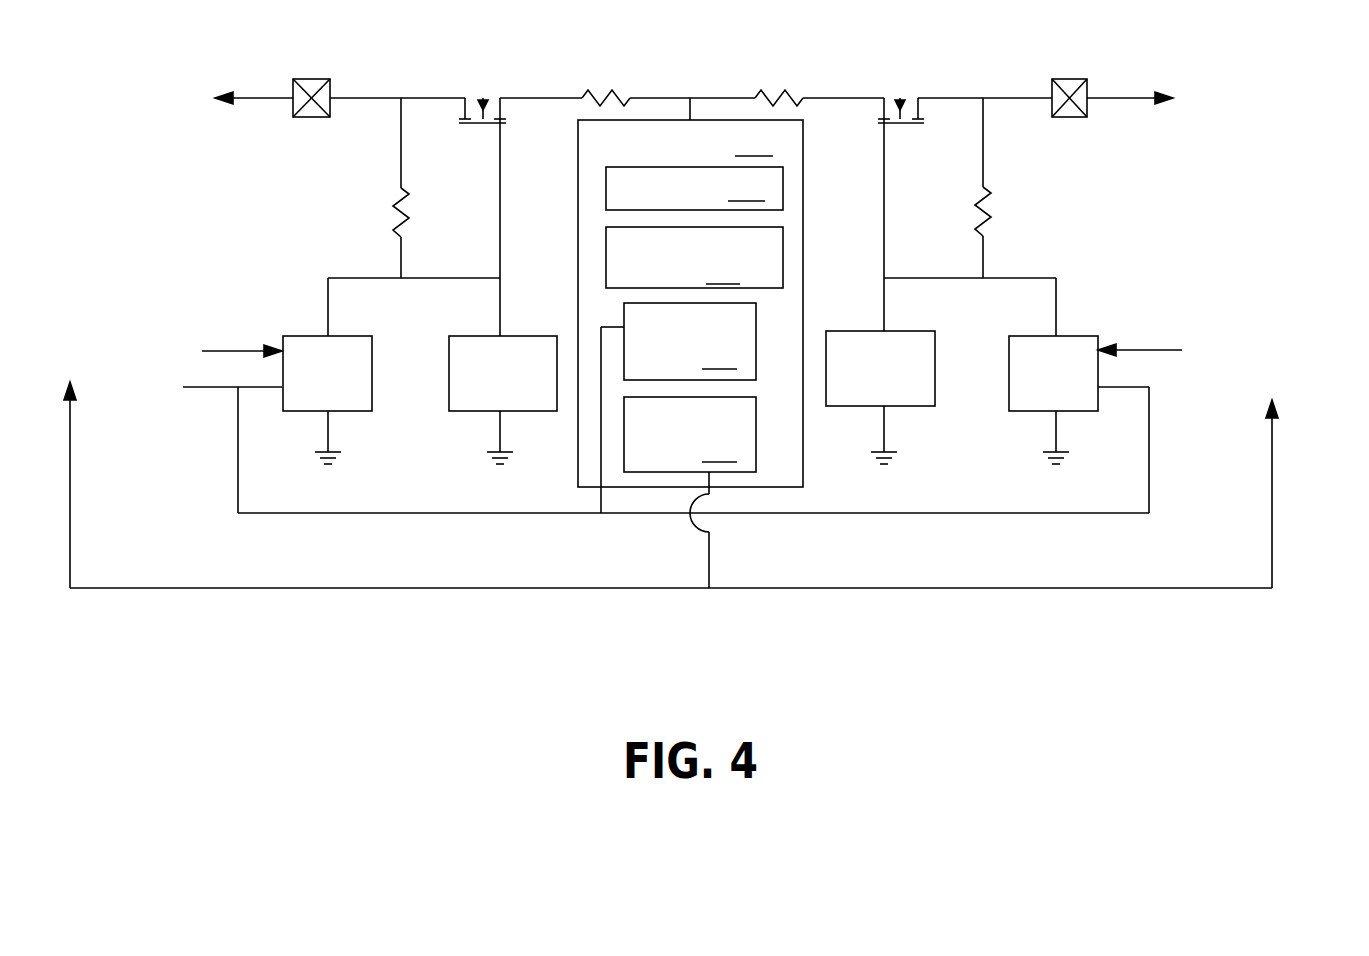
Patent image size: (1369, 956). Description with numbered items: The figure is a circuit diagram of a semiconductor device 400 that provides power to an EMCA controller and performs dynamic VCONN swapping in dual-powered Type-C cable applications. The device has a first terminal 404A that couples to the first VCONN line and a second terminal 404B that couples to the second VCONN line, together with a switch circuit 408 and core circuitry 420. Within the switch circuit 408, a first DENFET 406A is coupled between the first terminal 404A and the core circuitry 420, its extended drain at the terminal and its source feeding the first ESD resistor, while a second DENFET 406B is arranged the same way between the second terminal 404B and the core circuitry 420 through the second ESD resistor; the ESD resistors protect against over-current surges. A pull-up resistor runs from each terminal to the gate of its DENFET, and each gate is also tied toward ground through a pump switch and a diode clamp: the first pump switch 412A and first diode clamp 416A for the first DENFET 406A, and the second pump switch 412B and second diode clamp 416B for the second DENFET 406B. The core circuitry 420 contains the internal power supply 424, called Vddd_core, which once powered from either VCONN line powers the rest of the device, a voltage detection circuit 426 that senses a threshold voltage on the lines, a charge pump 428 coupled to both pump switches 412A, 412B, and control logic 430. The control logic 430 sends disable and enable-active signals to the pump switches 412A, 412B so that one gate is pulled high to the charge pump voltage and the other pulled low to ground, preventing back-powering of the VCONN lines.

The semiconductor device 400 is at (115, 37).
The first terminal 404A is at (311, 118).
The second terminal 404B is at (1069, 118).
The first drain-extended n-type field effect transistor (DENFET) 406A is at (483, 92).
The second drain-extended n-type field effect transistor (DENFET) 406B is at (900, 92).
The switch circuit 408 is at (862, 488).
The first pump switch 412A is at (305, 412).
The second pump switch 412B is at (1065, 412).
The first diode clamp 416A is at (470, 412).
The second diode clamp 416B is at (905, 407).
The core circuitry 420 is at (690, 326).
The internal power supply 424 is at (694, 188).
The voltage detection circuit 426 is at (694, 257).
The charge pump 428 is at (678, 408).
The control logic 430 is at (690, 464).